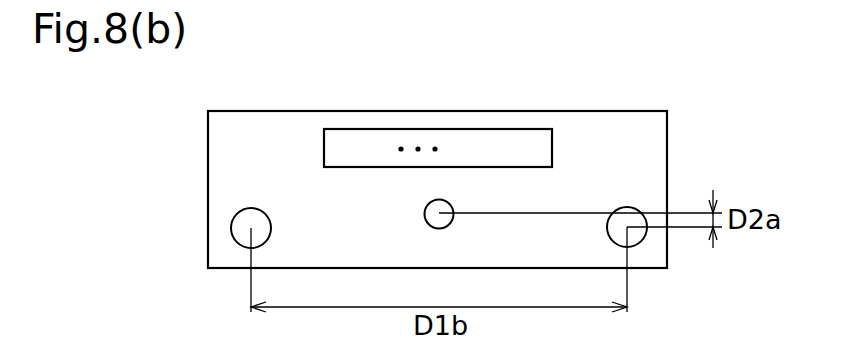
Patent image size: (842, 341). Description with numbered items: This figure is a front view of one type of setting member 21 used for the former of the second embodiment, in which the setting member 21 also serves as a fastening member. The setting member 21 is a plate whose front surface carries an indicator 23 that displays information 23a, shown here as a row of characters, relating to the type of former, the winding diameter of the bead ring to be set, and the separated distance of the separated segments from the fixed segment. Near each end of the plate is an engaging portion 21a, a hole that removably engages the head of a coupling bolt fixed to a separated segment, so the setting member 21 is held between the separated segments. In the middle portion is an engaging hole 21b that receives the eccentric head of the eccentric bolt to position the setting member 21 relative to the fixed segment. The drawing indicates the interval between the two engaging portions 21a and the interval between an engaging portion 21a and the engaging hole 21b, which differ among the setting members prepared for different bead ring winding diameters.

The setting member 21 is at (271, 118).
The engaging portion 21a is at (238, 222).
The engaging hole 21b is at (438, 213).
The indicator 23 is at (452, 131).
The information 23a is at (364, 143).